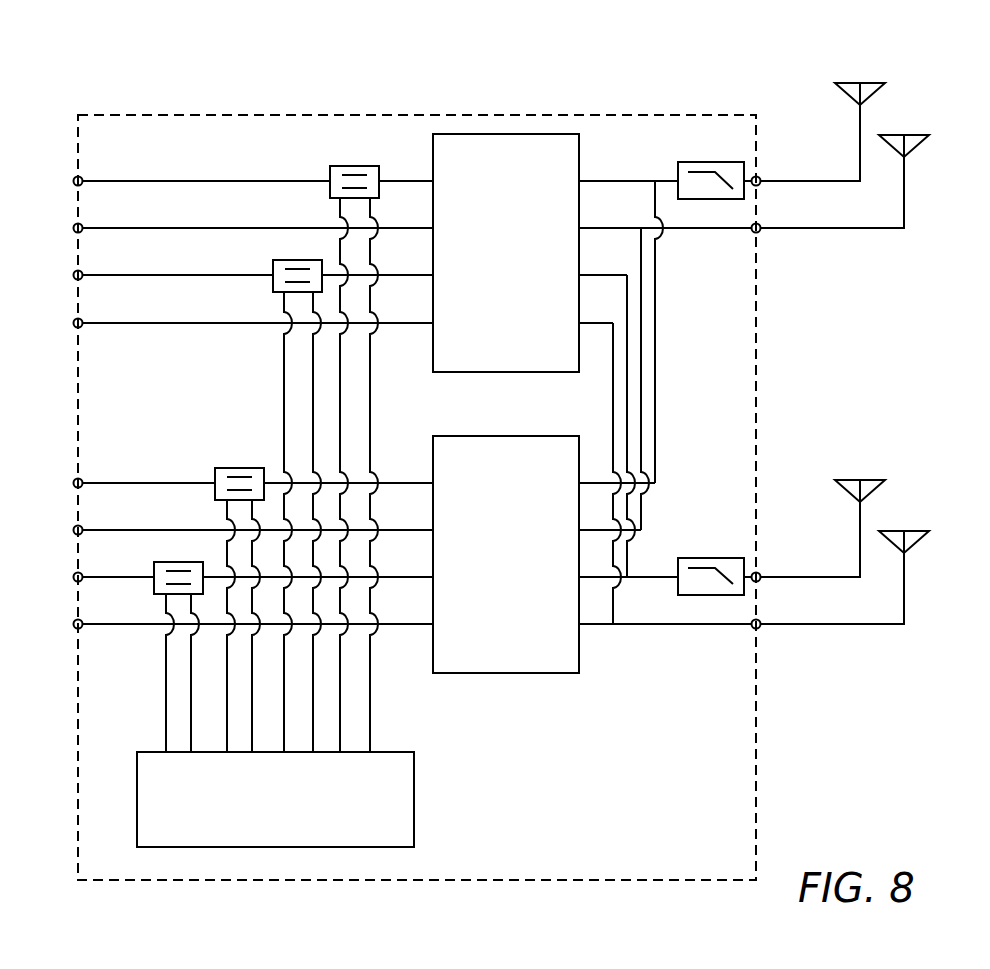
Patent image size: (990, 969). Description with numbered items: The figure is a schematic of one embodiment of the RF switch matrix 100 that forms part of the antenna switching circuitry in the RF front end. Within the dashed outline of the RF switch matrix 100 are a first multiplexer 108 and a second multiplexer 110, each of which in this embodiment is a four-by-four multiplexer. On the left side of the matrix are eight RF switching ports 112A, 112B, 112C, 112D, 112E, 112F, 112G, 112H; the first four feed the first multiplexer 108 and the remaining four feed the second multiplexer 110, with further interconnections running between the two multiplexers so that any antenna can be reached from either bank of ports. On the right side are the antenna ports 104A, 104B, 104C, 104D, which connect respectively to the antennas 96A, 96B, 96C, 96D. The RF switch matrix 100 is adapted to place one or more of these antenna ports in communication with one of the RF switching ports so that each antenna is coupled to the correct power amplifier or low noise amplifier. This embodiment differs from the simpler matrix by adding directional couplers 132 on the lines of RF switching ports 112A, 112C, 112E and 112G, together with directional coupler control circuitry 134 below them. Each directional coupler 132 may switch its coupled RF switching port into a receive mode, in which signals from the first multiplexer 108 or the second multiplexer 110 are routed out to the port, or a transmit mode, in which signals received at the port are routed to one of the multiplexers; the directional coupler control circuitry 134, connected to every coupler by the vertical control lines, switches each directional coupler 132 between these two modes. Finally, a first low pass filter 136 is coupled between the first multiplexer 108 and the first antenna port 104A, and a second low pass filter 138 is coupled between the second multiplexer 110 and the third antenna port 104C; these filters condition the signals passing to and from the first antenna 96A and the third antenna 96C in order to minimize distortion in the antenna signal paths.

The first antenna 96A is at (860, 83).
The antenna 96B is at (904, 135).
The third antenna 96C is at (860, 480).
The antenna 96D is at (904, 531).
The RF switch matrix 100 is at (737, 867).
The first antenna port 104A is at (762, 174).
The antenna port 104B is at (762, 221).
The third antenna port 104C is at (762, 569).
The antenna port 104D is at (762, 617).
The first multiplexer 108 is at (523, 362).
The second multiplexer 110 is at (523, 661).
The RF switching port 112A is at (76, 176).
The RF switching port 112B is at (76, 223).
The RF switching port 112C is at (76, 270).
The RF switching port 112D is at (76, 318).
The RF switching port 112E is at (76, 478).
The RF switching port 112F is at (76, 525).
The RF switching port 112G is at (76, 572).
The RF switching port 112H is at (76, 619).
The directional coupler 132 is at (355, 165).
The directional coupler control circuitry 134 is at (407, 838).
The first low pass filter 136 is at (683, 160).
The second low pass filter 138 is at (682, 556).